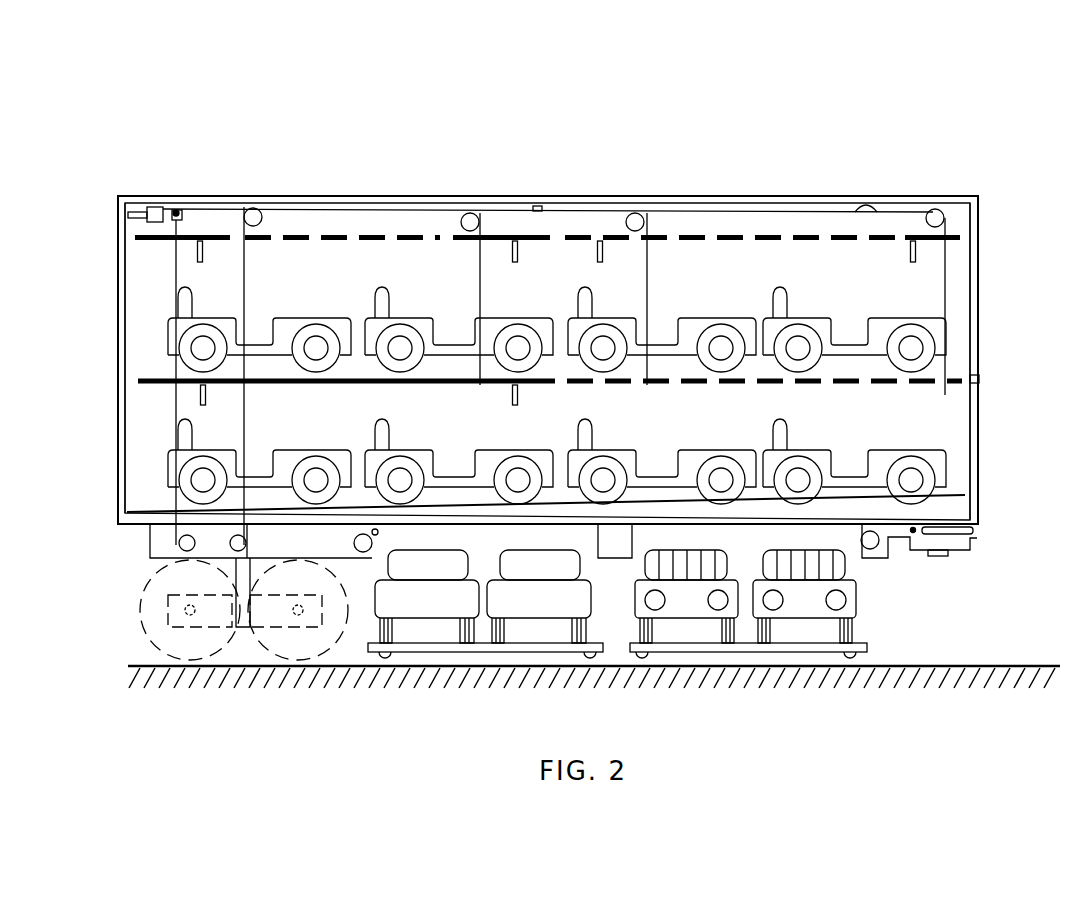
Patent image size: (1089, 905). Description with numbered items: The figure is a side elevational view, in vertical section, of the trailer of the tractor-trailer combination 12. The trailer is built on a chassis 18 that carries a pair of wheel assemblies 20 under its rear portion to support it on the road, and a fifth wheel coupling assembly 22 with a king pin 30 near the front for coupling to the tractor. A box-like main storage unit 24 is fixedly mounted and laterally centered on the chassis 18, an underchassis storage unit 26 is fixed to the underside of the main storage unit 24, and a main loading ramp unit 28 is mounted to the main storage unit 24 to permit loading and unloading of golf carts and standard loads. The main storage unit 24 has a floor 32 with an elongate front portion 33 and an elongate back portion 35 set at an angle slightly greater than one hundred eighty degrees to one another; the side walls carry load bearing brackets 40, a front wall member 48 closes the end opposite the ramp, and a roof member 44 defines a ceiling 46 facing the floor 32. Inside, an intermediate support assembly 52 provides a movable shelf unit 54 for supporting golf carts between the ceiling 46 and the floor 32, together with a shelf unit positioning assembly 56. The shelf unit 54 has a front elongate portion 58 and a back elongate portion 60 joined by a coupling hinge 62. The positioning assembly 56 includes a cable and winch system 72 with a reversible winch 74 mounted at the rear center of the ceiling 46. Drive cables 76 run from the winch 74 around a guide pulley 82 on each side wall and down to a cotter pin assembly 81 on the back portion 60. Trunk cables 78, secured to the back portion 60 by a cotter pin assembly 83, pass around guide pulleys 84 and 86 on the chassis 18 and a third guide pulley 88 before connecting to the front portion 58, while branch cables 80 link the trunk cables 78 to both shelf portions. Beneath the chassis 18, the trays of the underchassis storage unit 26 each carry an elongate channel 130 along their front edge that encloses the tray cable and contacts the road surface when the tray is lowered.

The tractor-trailer combination 12 is at (977, 531).
The chassis 18 is at (150, 533).
The wheel assemblies 20 is at (200, 684).
The fifth wheel coupling assembly 22 is at (995, 548).
The main storage unit 24 is at (773, 190).
The underchassis storage unit 26 is at (612, 662).
The main loading ramp unit 28 is at (120, 347).
The king pin 30 is at (937, 557).
The floor 32 is at (960, 509).
The front portion 33 is at (767, 485).
The back portion 35 is at (387, 500).
The load bearing brackets 40 is at (553, 382).
The roof member 44 is at (866, 208).
The ceiling 46 is at (890, 198).
The front wall member 48 is at (977, 220).
The intermediate support assembly 52 is at (915, 400).
The shelf unit 54 is at (950, 250).
The shelf unit positioning assembly 56 is at (388, 223).
The front elongate portion 58 is at (955, 385).
The back elongate portion 60 is at (165, 387).
The coupling hinge 62 is at (564, 382).
The cable and winch system 72 is at (128, 228).
The reversible winch 74 is at (152, 207).
The drive cables 76 is at (174, 263).
The trunk cables 78 is at (244, 257).
The branch cables 80 is at (481, 247).
The cotter pin assembly 81 is at (176, 371).
The guide pulley 82 is at (183, 210).
The cotter pin assembly 83 is at (177, 392).
The guide pulley 84 is at (256, 210).
The guide pulley 86 is at (470, 213).
The third guide pulley 88 is at (637, 213).
The elongate channel 130 is at (478, 650).